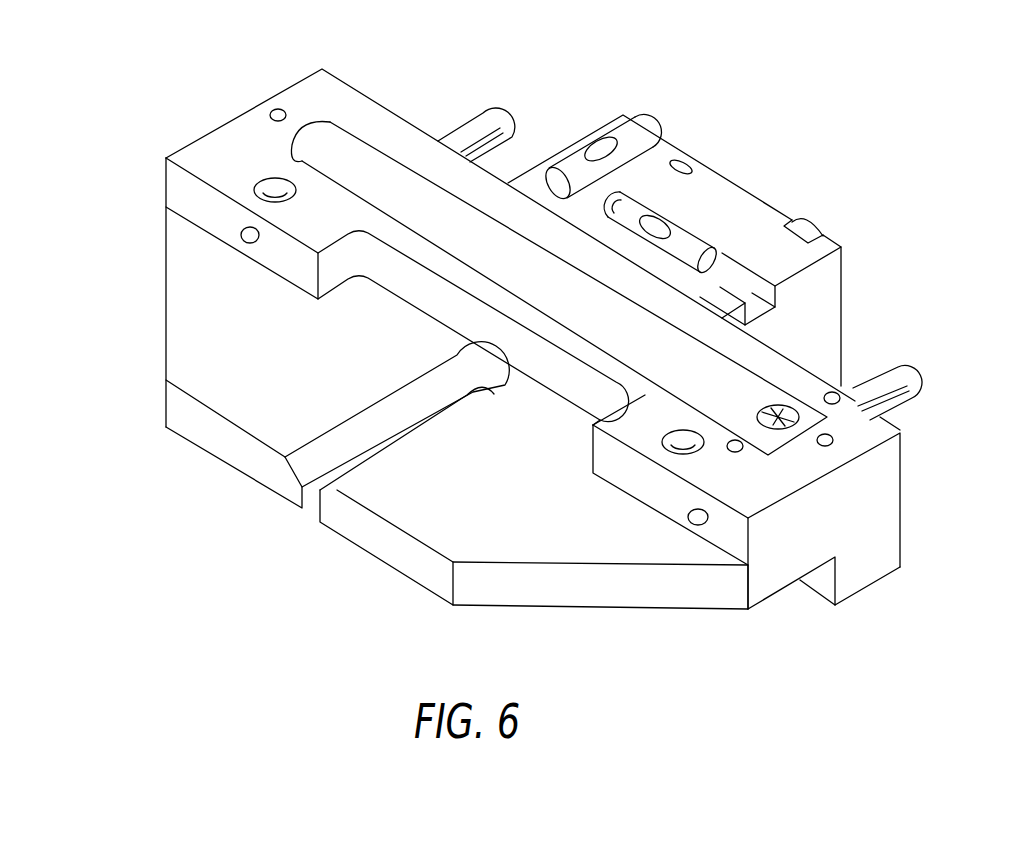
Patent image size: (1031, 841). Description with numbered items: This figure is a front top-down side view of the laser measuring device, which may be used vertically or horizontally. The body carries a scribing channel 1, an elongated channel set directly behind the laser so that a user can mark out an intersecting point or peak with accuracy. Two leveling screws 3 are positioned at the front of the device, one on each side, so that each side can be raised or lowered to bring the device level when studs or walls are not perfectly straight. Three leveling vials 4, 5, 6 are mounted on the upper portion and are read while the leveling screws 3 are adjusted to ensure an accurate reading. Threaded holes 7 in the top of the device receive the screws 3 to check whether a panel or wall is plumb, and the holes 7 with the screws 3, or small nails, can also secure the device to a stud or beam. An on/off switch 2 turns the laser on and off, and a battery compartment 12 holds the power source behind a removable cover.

The scribing channel 1 is at (313, 509).
The on/off switch 2 is at (778, 412).
The leveling screws 3 is at (462, 127).
The leveling vial 4 is at (622, 132).
The leveling vial 5 is at (655, 222).
The leveling vial 6 is at (807, 222).
The threaded holes 7 is at (275, 180).
The battery compartment 12 is at (377, 183).